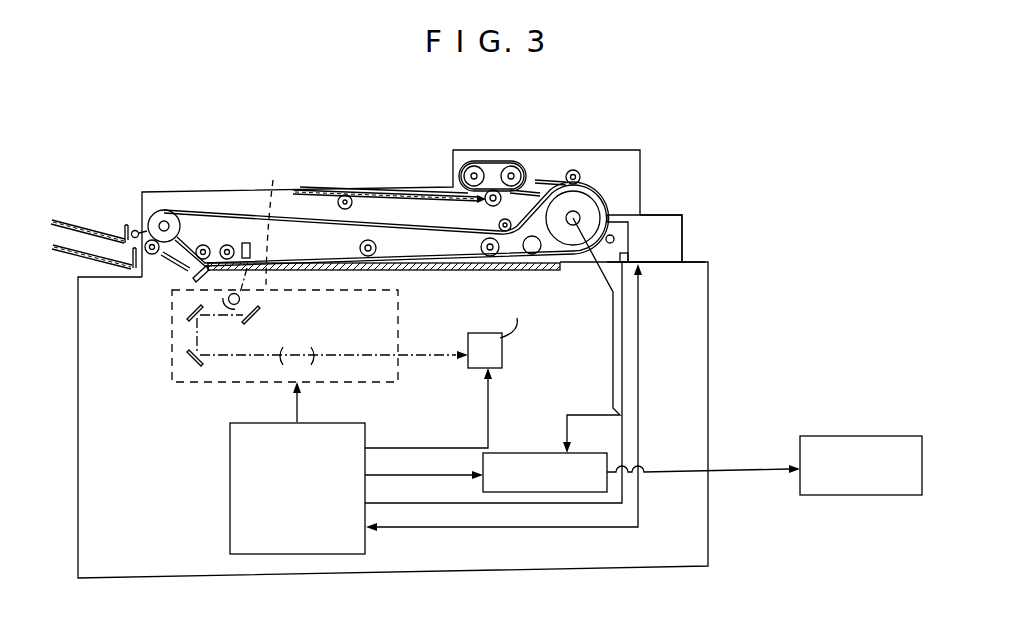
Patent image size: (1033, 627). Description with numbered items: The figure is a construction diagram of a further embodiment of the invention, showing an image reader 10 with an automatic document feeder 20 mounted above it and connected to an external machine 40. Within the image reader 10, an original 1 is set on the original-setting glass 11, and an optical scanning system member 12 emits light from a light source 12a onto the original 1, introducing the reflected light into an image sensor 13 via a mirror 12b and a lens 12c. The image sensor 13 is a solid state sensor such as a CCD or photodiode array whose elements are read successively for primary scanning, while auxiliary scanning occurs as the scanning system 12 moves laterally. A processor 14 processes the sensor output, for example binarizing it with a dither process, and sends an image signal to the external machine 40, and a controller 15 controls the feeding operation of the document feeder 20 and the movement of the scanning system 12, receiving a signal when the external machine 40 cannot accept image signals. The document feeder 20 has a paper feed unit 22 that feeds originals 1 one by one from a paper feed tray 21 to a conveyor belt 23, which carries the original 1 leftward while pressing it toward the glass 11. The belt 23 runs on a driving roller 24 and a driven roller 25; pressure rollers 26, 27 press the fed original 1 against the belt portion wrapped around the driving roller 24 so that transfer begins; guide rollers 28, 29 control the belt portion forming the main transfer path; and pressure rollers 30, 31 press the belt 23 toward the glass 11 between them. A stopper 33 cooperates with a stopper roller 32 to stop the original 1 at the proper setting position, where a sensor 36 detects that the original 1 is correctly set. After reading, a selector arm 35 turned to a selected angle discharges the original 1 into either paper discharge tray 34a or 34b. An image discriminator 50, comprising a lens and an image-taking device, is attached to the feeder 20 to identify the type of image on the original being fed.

The original 1 is at (370, 187).
The image reader 10 is at (726, 301).
The original-setting glass 11 is at (454, 272).
The optical scanning system member 12 is at (172, 365).
The light source 12a is at (243, 298).
The mirror 12b is at (260, 318).
The lens 12c is at (290, 368).
The image sensor 13 is at (468, 340).
The processor 14 is at (543, 452).
The controller 15 is at (230, 497).
The automatic document feeder 20 is at (546, 130).
The paper feed tray 21 is at (297, 196).
The paper feed unit 22 is at (489, 160).
The conveyor belt 23 is at (417, 224).
The driving roller 24 is at (605, 198).
The driven roller 25 is at (164, 224).
The pressure roller 26 is at (575, 170).
The pressure roller 27 is at (615, 243).
The guide roller 28 is at (533, 255).
The guide roller 29 is at (203, 246).
The pressure roller 30 is at (491, 257).
The pressure roller 31 is at (377, 250).
The stopper roller 32 is at (227, 246).
The stopper 33 is at (193, 275).
The paper discharge tray 34a is at (88, 256).
The paper discharge tray 34b is at (89, 228).
The selector arm 35 is at (132, 231).
The sensor 36 is at (247, 243).
The external machine 40 is at (883, 420).
The image discriminator 50 is at (679, 228).